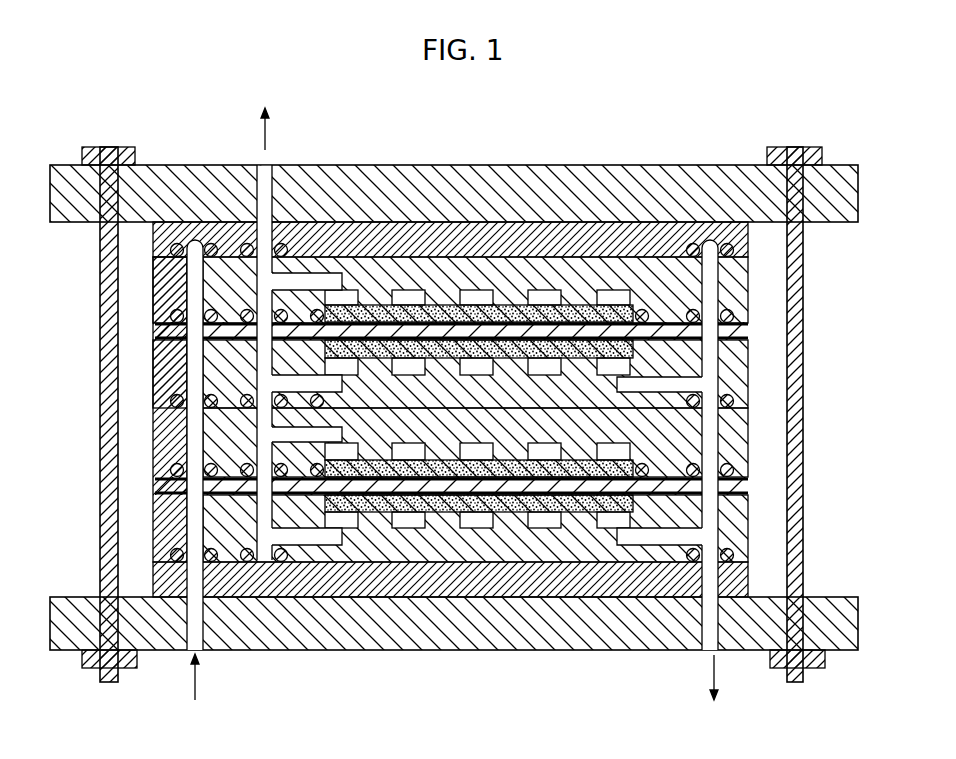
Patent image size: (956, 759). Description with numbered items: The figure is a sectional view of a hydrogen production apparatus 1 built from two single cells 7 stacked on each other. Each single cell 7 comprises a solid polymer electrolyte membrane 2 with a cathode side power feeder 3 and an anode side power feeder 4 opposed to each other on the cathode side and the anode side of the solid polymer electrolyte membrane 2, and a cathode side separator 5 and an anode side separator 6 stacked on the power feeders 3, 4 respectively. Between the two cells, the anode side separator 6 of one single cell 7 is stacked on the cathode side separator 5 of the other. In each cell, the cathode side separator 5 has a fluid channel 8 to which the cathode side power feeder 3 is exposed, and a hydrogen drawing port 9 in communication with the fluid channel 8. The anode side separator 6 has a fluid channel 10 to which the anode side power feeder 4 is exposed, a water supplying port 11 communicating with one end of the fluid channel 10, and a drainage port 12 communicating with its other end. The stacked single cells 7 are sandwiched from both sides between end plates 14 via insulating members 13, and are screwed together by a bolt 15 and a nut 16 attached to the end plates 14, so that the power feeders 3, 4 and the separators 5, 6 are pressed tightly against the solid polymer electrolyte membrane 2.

The hydrogen production apparatus 1 is at (459, 392).
The solid polymer electrolyte membrane 2 is at (153, 332).
The cathode side power feeder 3 is at (618, 303).
The anode side power feeder 4 is at (618, 352).
The cathode side separator 5 is at (152, 282).
The anode side separator 6 is at (152, 382).
The single cell 7 is at (487, 407).
The fluid channel 8 is at (475, 293).
The hydrogen drawing port 9 is at (475, 290).
The fluid channel 10 is at (483, 375).
The water supplying port 11 is at (475, 374).
The drainage port 12 is at (622, 384).
The insulating member 13 is at (744, 240).
The end plate 14 is at (838, 225).
The bolt 15 is at (805, 150).
The nut 16 is at (822, 668).